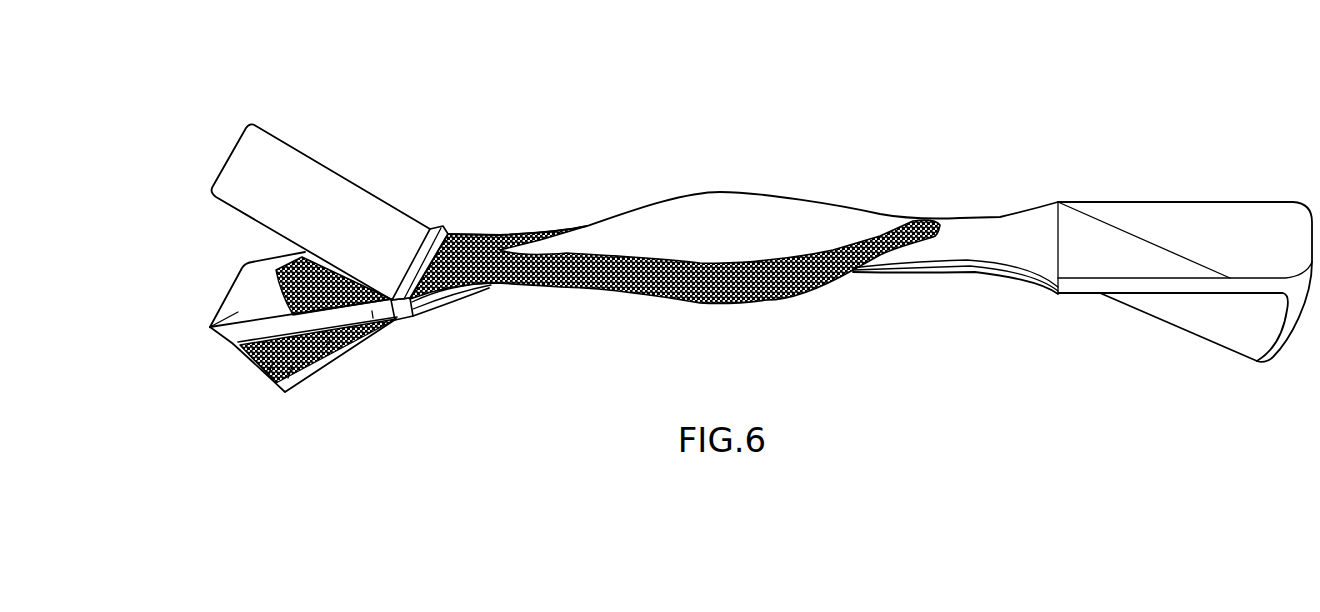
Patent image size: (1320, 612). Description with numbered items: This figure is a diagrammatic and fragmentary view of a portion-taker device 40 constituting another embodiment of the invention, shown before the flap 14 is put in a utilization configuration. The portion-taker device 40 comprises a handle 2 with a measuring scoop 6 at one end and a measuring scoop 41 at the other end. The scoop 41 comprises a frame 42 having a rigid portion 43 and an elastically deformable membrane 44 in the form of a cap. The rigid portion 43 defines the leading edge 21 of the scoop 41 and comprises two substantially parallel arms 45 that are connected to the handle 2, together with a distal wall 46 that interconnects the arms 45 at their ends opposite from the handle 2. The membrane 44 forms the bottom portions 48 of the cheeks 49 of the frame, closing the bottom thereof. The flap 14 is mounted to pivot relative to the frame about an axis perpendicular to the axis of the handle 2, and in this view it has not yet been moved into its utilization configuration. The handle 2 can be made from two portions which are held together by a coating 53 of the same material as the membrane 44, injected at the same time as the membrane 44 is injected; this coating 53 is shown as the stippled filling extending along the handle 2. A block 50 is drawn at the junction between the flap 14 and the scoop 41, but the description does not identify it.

The handle 2 is at (955, 198).
The measuring scoop 6 is at (1227, 220).
The flap 14 is at (248, 175).
The leading edge 21 is at (243, 298).
The portion-taker device 40 is at (858, 198).
The measuring scoop 41 is at (335, 203).
The frame 42 is at (233, 347).
The rigid portion 43 is at (243, 288).
The elastically deformable membrane 44 is at (323, 350).
The arms 45 is at (293, 257).
The distal wall 46 is at (208, 328).
The bottom portions 48 is at (288, 378).
The cheeks 49 is at (273, 362).
The clamping block 50 is at (357, 284).
The coating 53 is at (712, 280).